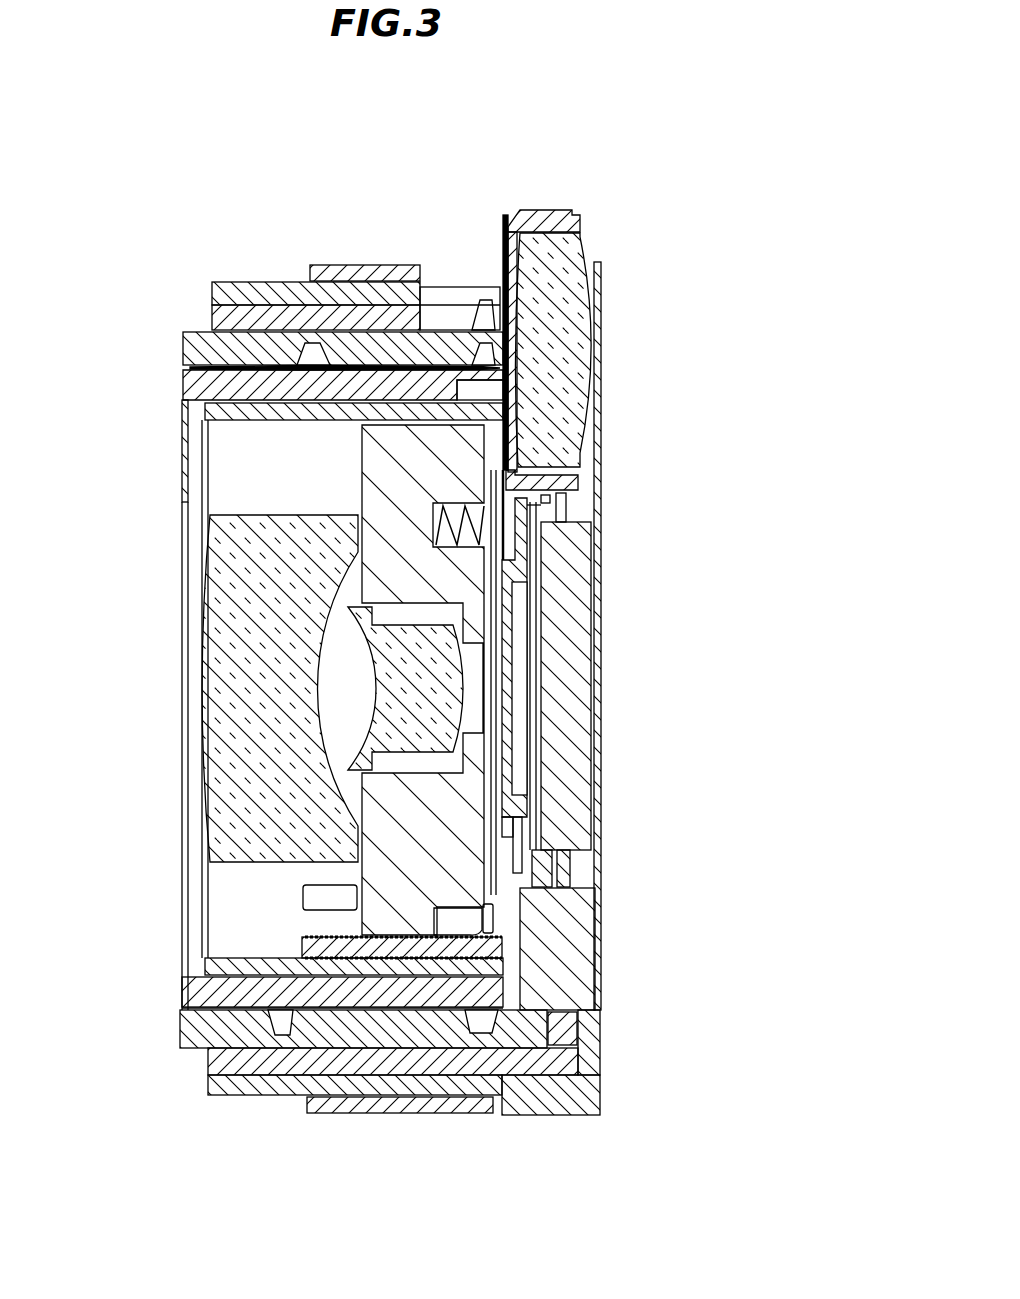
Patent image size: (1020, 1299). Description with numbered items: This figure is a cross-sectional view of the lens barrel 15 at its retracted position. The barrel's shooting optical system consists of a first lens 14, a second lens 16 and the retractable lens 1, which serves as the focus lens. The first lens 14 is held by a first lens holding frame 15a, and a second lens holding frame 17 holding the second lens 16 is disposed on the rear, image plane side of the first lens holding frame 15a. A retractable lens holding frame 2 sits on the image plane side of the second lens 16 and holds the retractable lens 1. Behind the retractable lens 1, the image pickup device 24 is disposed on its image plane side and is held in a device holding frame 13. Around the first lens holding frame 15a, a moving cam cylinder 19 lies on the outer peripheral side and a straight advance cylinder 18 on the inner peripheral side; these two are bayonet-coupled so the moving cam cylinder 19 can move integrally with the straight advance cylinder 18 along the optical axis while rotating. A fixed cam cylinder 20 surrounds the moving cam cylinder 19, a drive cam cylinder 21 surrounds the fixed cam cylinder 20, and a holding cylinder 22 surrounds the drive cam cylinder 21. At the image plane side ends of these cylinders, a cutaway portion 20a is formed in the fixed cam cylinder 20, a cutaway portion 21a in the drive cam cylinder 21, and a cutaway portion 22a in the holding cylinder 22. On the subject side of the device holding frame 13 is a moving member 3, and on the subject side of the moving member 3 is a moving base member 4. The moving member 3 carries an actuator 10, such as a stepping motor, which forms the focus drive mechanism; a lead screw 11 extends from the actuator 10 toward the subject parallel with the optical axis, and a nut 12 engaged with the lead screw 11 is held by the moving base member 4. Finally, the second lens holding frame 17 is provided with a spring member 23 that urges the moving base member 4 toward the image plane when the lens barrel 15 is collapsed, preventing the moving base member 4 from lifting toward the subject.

The retractable lens 1 is at (575, 345).
The retractable lens holding frame 2 is at (553, 215).
The moving member 3 is at (565, 1037).
The moving base member 4 is at (517, 577).
The actuator 10 is at (565, 962).
The lead screw 11 is at (363, 950).
The nut 12 is at (462, 918).
The device holding frame 13 is at (597, 1017).
The first lens 14 is at (245, 585).
The lens barrel 15 is at (580, 192).
The first lens holding frame 15a is at (215, 392).
The second lens 16 is at (355, 690).
The second lens holding frame 17 is at (372, 875).
The straight advance cylinder 18 is at (300, 410).
The moving cam cylinder 19 is at (383, 1032).
The fixed cam cylinder 20 is at (470, 1070).
The cutaway portion 20a is at (500, 318).
The drive cam cylinder 21 is at (540, 1110).
The cutaway portion 21a is at (500, 297).
The holding cylinder 22 is at (368, 272).
The cutaway portion 22a is at (504, 275).
The spring member 23 is at (482, 527).
The image pickup device 24 is at (565, 665).